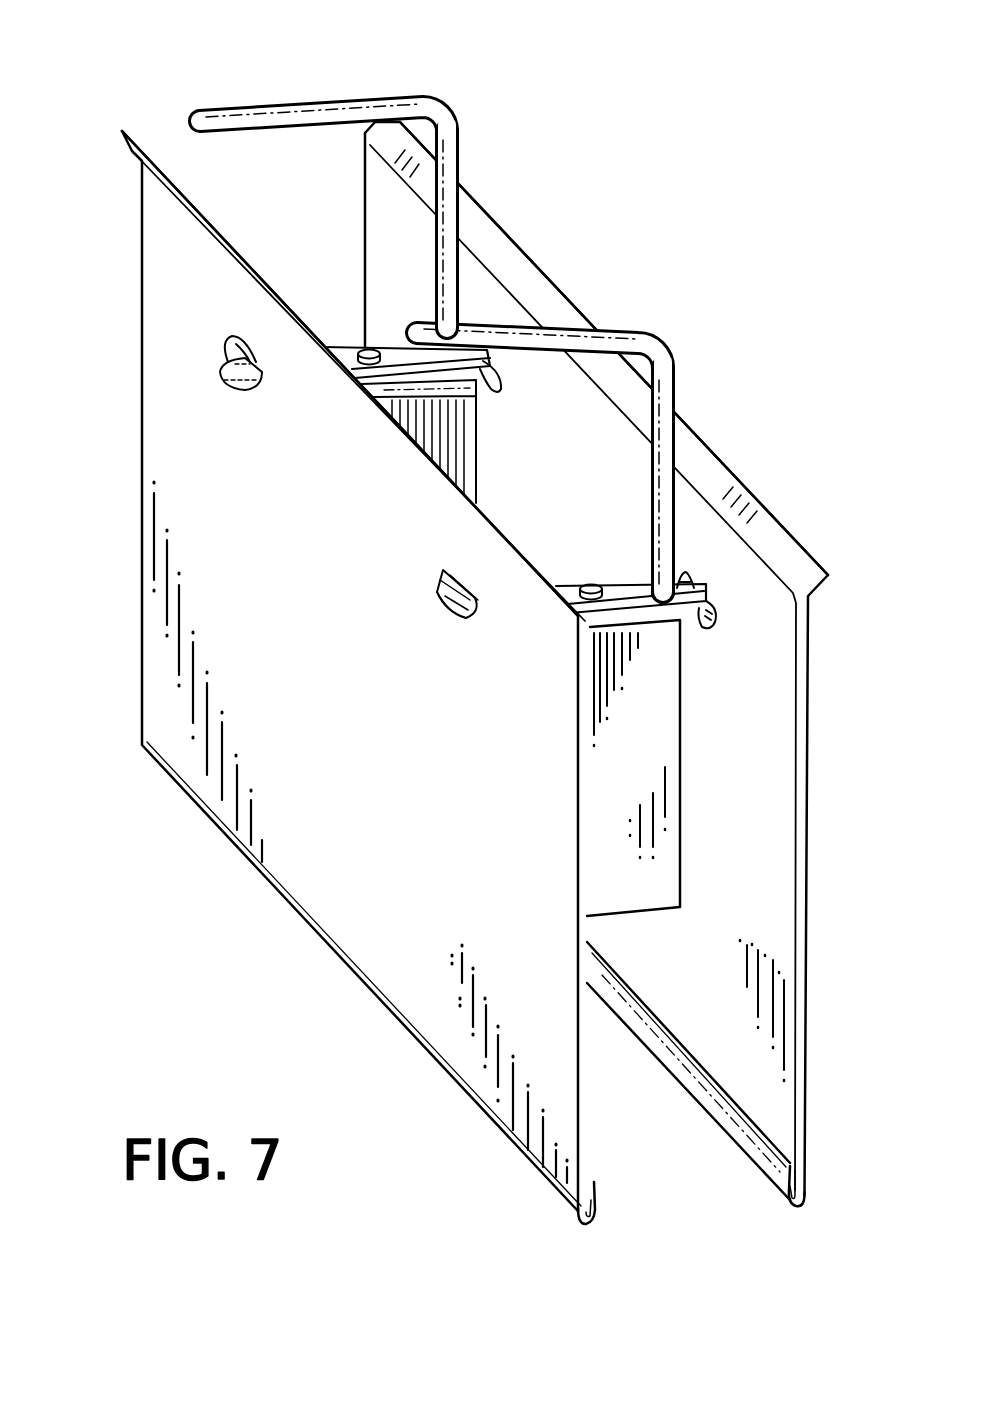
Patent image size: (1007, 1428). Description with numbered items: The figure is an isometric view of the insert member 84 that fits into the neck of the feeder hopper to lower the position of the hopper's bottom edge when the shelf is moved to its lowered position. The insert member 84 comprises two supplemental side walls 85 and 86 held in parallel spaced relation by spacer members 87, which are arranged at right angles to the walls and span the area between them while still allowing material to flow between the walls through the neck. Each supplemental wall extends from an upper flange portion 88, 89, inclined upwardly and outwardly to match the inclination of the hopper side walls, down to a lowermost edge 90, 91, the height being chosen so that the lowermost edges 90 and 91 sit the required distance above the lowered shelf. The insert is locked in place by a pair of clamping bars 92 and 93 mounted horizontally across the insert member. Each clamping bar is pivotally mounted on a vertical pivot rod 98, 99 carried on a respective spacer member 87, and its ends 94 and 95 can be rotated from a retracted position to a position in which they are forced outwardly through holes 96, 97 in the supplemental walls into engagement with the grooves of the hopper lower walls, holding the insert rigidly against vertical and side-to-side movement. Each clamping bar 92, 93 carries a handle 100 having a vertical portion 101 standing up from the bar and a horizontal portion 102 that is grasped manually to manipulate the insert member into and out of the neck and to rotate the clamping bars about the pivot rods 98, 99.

The insert member 84 is at (703, 176).
The supplemental side wall 85 is at (379, 933).
The supplemental side wall 86 is at (811, 845).
The spacer member 87 is at (465, 428).
The upper flange portion 88 is at (124, 146).
The upper flange portion 89 is at (769, 530).
The lowermost edge 90 is at (592, 1221).
The lowermost edge 91 is at (790, 1210).
The clamping bar 92 is at (392, 350).
The clamping bar 93 is at (622, 587).
The end of clamping bar 94 is at (433, 578).
The end of clamping bar 95 is at (704, 587).
The hole 96 is at (468, 621).
The hole 97 is at (704, 628).
The vertical pivot rod 98 is at (361, 349).
The vertical pivot rod 99 is at (591, 584).
The handle 100 is at (487, 306).
The vertical portion 101 is at (456, 150).
The horizontal portion 102 is at (337, 106).